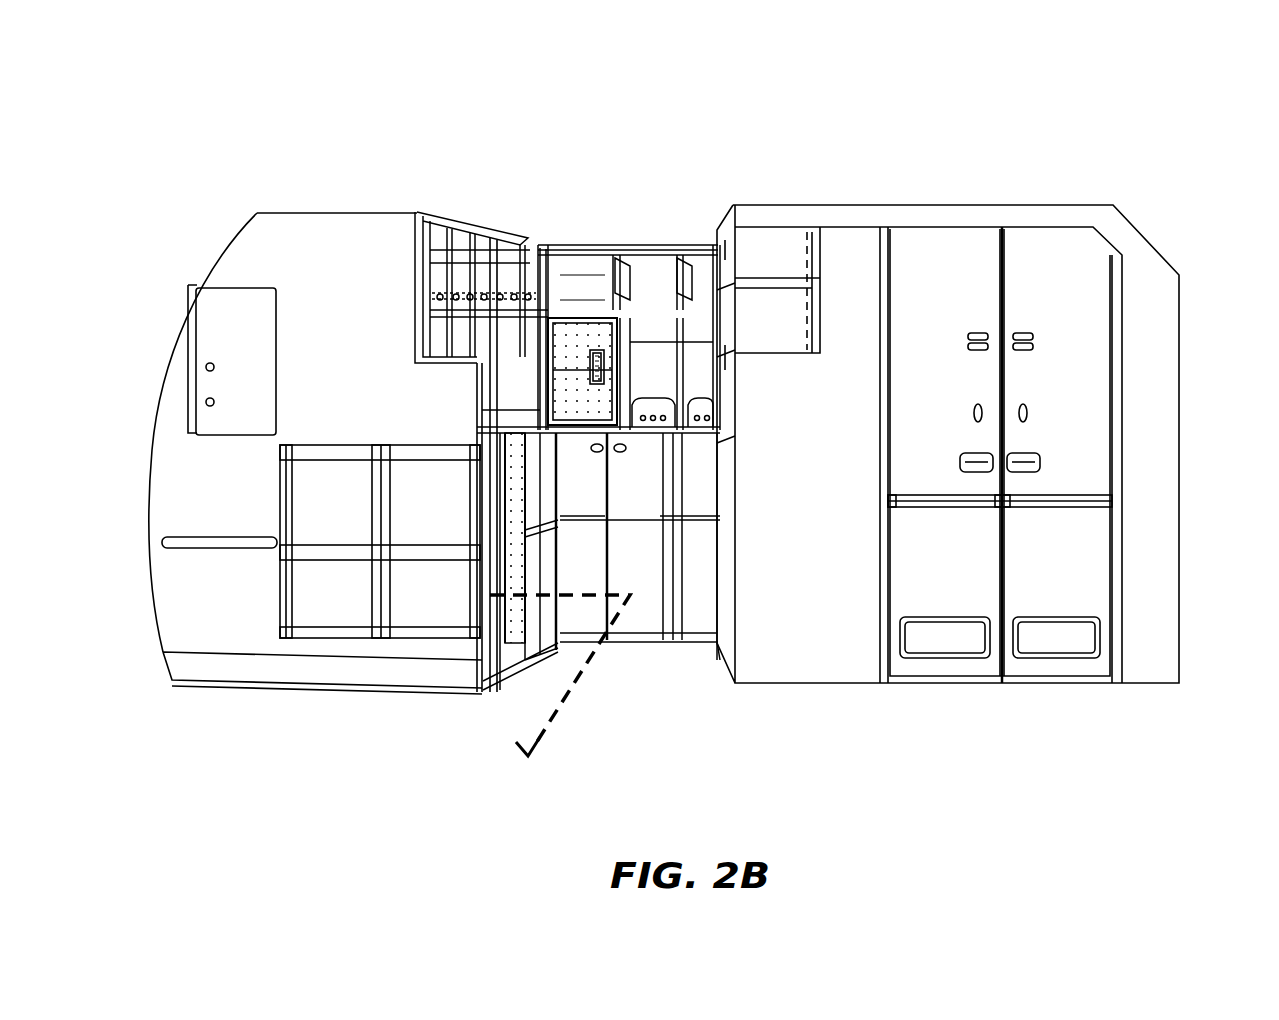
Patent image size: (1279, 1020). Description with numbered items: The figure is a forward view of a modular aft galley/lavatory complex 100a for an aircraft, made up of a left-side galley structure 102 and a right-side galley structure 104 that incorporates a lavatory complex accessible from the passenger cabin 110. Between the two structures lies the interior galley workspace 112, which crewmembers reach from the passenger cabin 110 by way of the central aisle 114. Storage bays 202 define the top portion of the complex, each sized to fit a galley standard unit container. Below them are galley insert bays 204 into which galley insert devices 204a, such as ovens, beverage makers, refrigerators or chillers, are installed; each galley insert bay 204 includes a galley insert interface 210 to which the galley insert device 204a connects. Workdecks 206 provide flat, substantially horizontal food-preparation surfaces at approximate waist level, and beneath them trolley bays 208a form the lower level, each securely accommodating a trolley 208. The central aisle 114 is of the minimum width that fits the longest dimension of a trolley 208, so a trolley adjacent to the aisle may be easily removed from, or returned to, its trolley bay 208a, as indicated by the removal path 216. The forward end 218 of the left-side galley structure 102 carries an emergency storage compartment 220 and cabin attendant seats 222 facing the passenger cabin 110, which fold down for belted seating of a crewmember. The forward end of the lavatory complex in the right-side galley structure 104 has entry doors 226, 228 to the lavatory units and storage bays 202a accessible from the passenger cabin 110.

The aft galley/lavatory complex 100a is at (128, 116).
The left-side galley structure 102 is at (250, 193).
The right-side galley structure 104 is at (1212, 206).
The passenger cabin 110 is at (833, 784).
The interior galley workspace 112 is at (667, 647).
The central aisle 114 is at (638, 684).
The storage bays 202 is at (580, 280).
The storage bays 202a is at (777, 247).
The galley insert bays 204 is at (663, 357).
The galley insert devices 204a is at (585, 342).
The workdecks 206 is at (517, 415).
The trolleys 208 is at (497, 630).
The trolley bays 208a is at (517, 640).
The galley insert interface 210 is at (643, 420).
The trolley removal 216 is at (565, 697).
The forward end 218 is at (323, 246).
The emergency storage compartment 220 is at (240, 332).
The cabin attendant seats 222 is at (328, 595).
The entry door 226 is at (955, 257).
The entry door 228 is at (1050, 257).